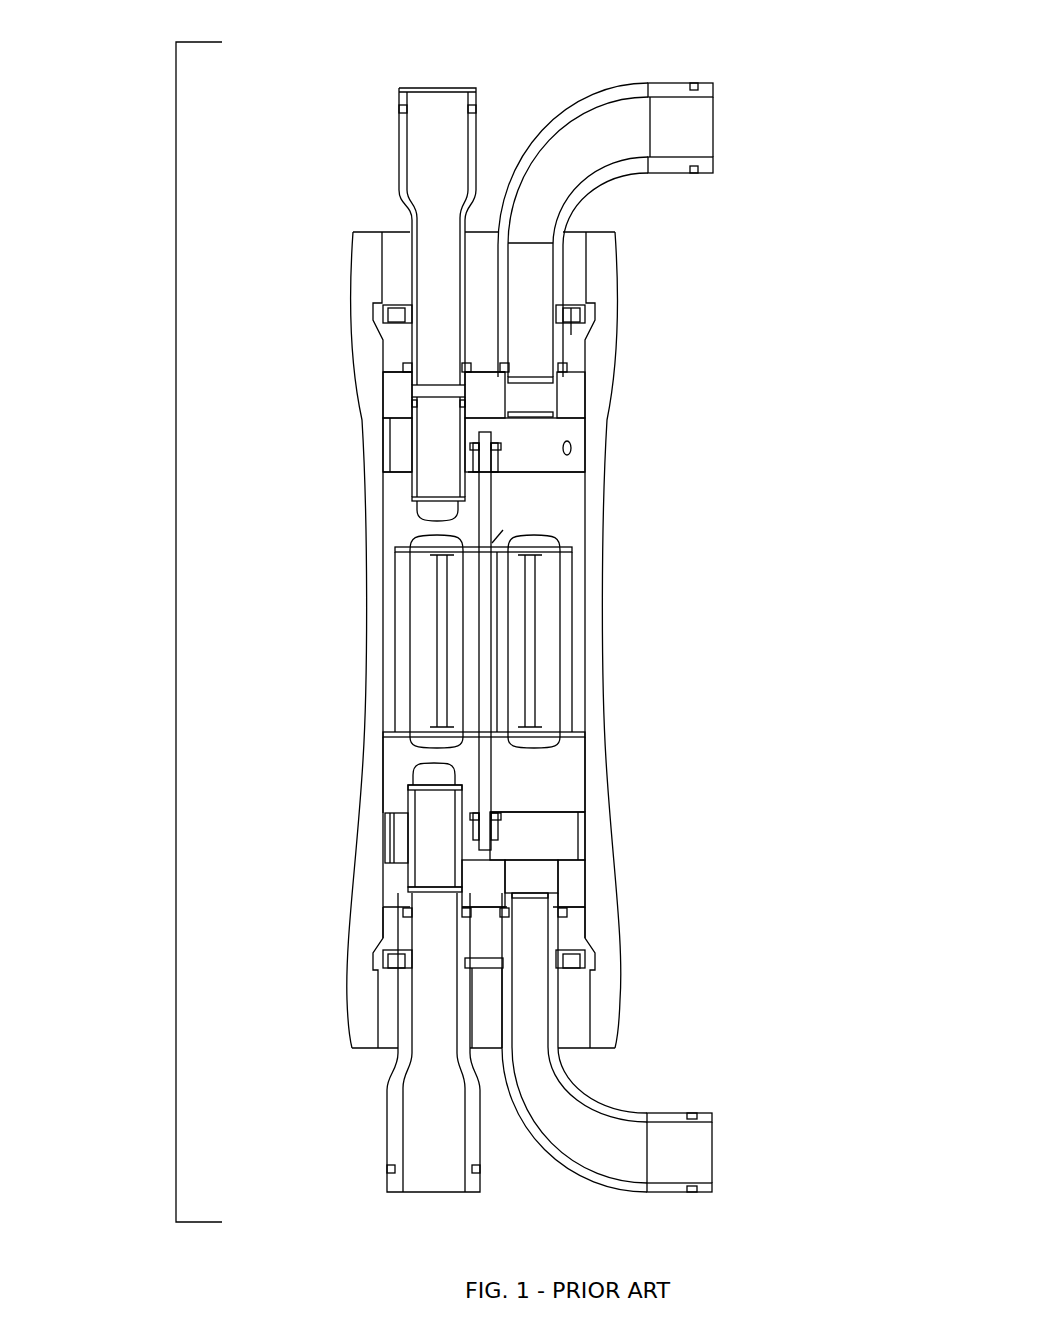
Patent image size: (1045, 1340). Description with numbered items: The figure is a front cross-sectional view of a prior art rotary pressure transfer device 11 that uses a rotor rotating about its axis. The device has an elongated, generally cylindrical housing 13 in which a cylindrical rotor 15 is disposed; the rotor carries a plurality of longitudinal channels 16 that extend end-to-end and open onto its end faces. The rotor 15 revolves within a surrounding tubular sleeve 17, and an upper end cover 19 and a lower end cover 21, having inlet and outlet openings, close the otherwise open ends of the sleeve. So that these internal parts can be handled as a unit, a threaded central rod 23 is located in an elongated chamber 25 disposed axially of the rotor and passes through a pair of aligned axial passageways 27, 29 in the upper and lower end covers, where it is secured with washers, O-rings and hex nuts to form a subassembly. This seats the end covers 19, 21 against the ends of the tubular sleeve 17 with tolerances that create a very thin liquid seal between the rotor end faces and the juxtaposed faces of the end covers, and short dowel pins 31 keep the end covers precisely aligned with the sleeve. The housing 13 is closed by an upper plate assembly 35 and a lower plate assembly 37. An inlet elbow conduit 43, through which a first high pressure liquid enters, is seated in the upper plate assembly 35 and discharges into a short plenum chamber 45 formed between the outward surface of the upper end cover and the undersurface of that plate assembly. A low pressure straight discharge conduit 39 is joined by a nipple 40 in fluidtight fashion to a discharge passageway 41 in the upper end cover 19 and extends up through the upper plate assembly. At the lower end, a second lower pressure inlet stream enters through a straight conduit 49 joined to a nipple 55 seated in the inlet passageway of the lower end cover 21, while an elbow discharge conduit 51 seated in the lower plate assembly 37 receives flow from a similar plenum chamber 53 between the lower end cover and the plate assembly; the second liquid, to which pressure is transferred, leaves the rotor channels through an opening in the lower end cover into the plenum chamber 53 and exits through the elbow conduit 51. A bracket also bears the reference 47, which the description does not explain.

The rotary pressure transfer device 11 is at (180, 490).
The housing 13 is at (375, 553).
The rotor 15 is at (404, 595).
The longitudinal channels 16 is at (548, 563).
The tubular sleeve 17 is at (577, 597).
The upper end cover 19 is at (532, 490).
The lower end cover 21 is at (557, 772).
The central rod 23 is at (498, 768).
The elongated chamber 25 is at (497, 665).
The axial passageway 27 is at (505, 513).
The axial passageway 29 is at (560, 722).
The dowel pins 31 is at (415, 633).
The upper plate assembly 35 is at (578, 390).
The lower plate assembly 37 is at (572, 925).
The discharge conduit 39 is at (410, 215).
The nipple 40 is at (427, 445).
The discharge passageway 41 is at (425, 497).
The inlet elbow conduit 43 is at (665, 87).
The plenum chamber 45 is at (545, 440).
The bolt flange 47 is at (590, 318).
The straight conduit 49 is at (395, 1087).
The elbow discharge conduit 51 is at (587, 1090).
The plenum chamber 53 is at (556, 836).
The nipple 55 is at (421, 853).